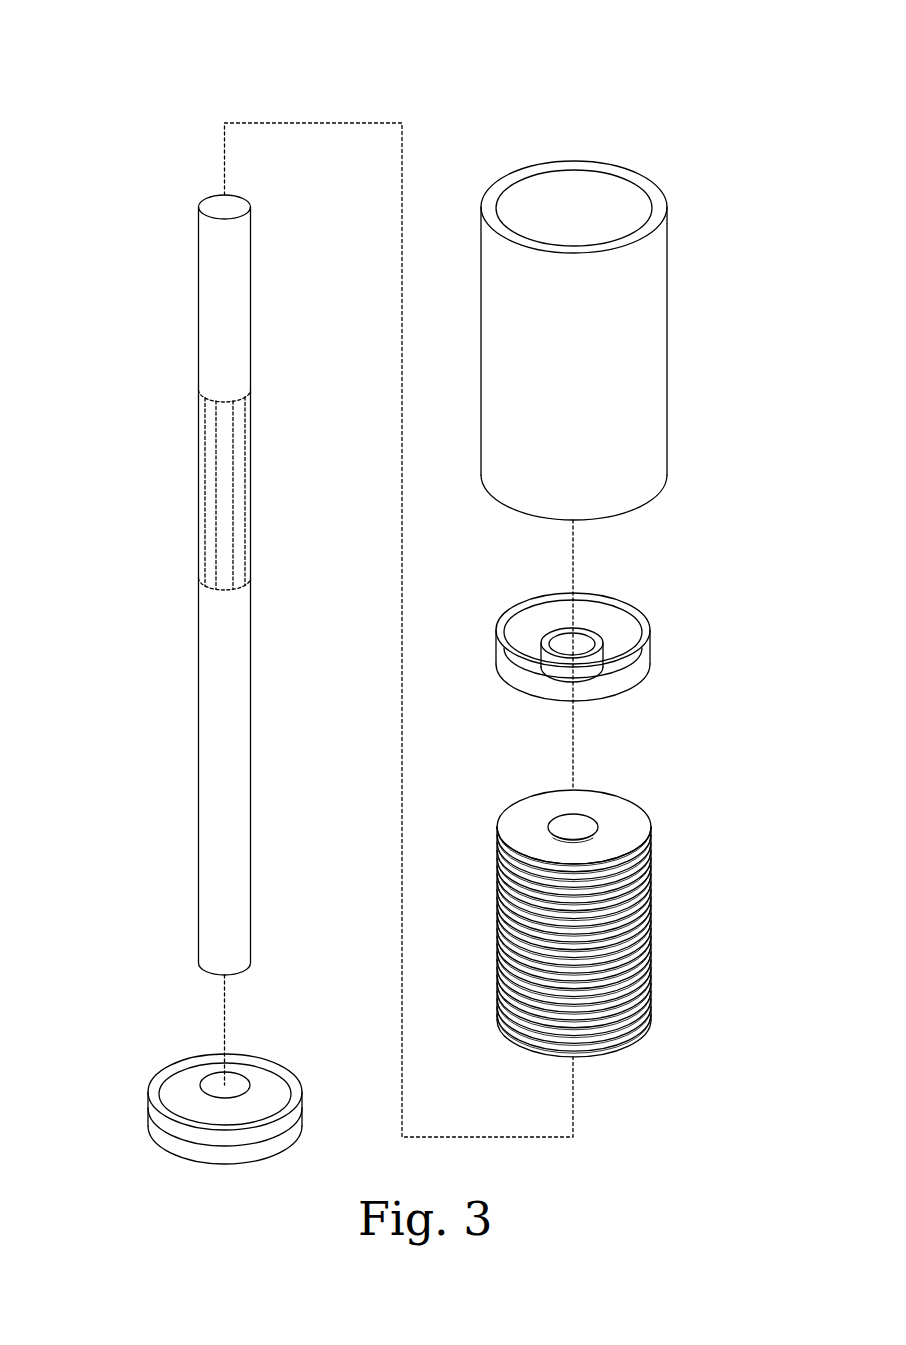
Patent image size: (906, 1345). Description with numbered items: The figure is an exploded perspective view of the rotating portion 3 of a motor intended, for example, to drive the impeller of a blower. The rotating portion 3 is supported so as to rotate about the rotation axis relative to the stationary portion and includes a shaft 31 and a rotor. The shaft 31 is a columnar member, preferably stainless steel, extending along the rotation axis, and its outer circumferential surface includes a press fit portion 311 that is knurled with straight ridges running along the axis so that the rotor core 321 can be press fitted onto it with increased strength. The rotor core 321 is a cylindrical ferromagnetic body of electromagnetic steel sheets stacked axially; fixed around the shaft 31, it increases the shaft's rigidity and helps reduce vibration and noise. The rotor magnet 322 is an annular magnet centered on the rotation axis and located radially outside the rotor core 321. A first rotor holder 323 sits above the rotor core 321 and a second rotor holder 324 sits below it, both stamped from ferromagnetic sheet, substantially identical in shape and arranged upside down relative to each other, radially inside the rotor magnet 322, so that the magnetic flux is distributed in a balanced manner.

The rotating portion 3 is at (671, 100).
The shaft 31 is at (205, 650).
The press fit portion 311 is at (215, 507).
The rotor core 321 is at (652, 930).
The rotor magnet 322 is at (642, 327).
The first rotor holder 323 is at (652, 667).
The second rotor holder 324 is at (150, 1121).